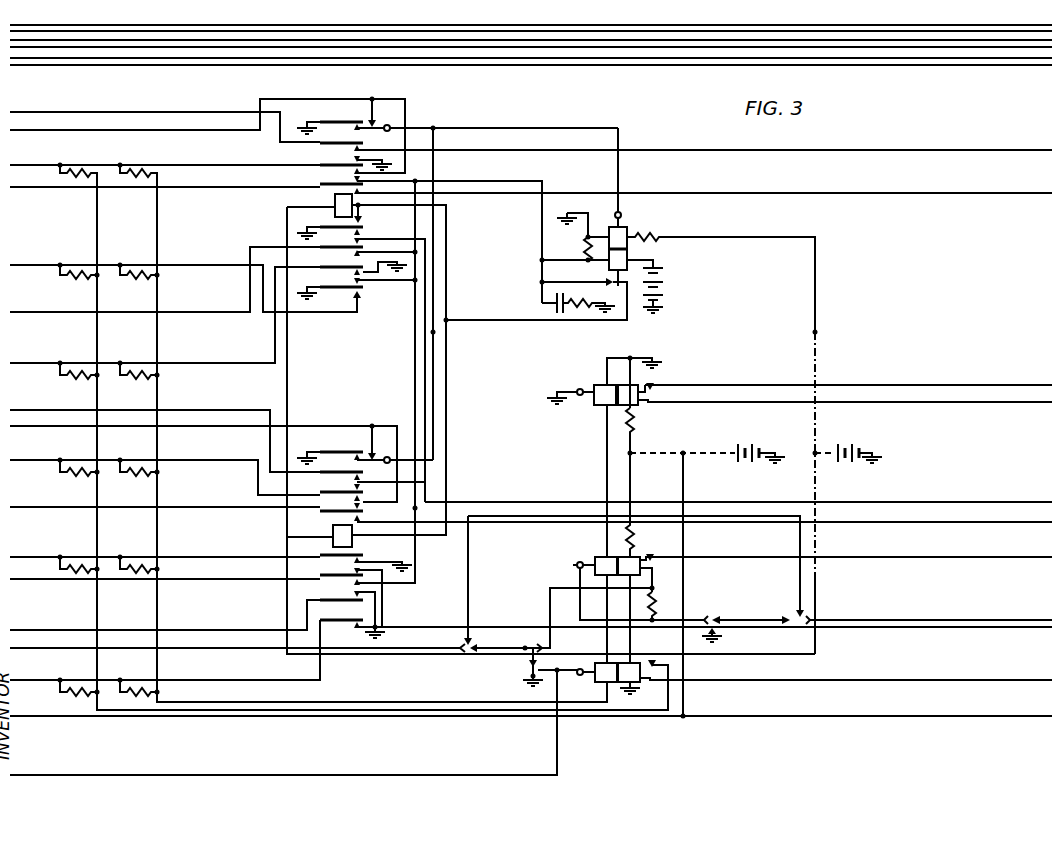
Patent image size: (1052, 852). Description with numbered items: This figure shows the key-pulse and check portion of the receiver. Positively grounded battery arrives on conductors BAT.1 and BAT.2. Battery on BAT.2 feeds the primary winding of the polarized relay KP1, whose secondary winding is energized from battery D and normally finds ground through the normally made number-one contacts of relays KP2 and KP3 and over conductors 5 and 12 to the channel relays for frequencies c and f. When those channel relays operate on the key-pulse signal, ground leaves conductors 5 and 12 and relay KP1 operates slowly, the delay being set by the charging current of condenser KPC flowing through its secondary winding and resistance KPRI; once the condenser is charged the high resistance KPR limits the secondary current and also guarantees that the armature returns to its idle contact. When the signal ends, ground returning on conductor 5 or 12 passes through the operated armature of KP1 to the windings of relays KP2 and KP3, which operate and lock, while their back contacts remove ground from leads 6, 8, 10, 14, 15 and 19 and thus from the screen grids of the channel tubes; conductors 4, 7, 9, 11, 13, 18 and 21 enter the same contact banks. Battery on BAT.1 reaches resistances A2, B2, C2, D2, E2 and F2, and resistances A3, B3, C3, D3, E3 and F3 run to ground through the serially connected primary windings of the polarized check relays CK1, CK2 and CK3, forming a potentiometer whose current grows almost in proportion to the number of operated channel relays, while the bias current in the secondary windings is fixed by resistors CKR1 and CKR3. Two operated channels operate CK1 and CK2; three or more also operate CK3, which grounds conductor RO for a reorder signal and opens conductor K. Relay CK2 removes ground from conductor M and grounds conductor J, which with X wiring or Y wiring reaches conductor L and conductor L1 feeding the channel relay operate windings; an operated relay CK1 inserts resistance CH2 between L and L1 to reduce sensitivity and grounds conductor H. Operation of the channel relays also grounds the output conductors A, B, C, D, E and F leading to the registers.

The conductor 4 is at (30, 112).
The conductor 5 is at (30, 130).
The lead 6 is at (30, 165).
The conductor 7 is at (30, 187).
The lead 8 is at (30, 265).
The conductor 9 is at (30, 312).
The conductor 10 is at (37, 352).
The conductor 11 is at (37, 399).
The conductor 12 is at (37, 415).
The conductor 13 is at (37, 496).
The conductor 14 is at (37, 546).
The lead 15 is at (37, 449).
The conductor 18 is at (37, 619).
The conductor 19 is at (37, 669).
The conductor 21 is at (30, 579).
The conductor L1 is at (37, 637).
The conductor J is at (33, 716).
The conductor F is at (1016, 134).
The conductor E is at (1016, 176).
The conductor D is at (666, 285).
The conductor RO is at (1023, 382).
The conductor K is at (1017, 401).
The conductor C is at (1017, 499).
The conductor B is at (1017, 519).
The conductor H is at (1017, 554).
The conductor L is at (1017, 618).
The conductor A is at (1020, 630).
The conductor M is at (1019, 677).
The resistance F2 is at (87, 190).
The resistance F3 is at (145, 190).
The resistance E2 is at (87, 281).
The resistance E3 is at (145, 281).
The resistance D2 is at (87, 381).
The resistance D3 is at (145, 381).
The resistance C2 is at (87, 480).
The resistance C3 is at (145, 480).
The resistance B2 is at (87, 582).
The resistance B3 is at (145, 582).
The resistance A2 is at (87, 694).
The resistance A3 is at (145, 694).
The polarized relay KP1 is at (622, 235).
The relay KP2 is at (335, 203).
The relay KP3 is at (333, 528).
The resistance KPR is at (583, 249).
The condenser KPC is at (555, 317).
The resistance KPRI is at (581, 316).
The polarized check relay CK3 is at (600, 407).
The resistor CKR3 is at (637, 418).
The polarized check relay CK1 is at (600, 556).
The resistor CKR1 is at (634, 538).
The resistance CH2 is at (670, 590).
The polarized check relay CK2 is at (600, 682).
The conductor BAT.1 is at (703, 456).
The conductor BAT.2 is at (817, 427).
The X wiring X is at (468, 606).
The Y wiring Y is at (502, 639).